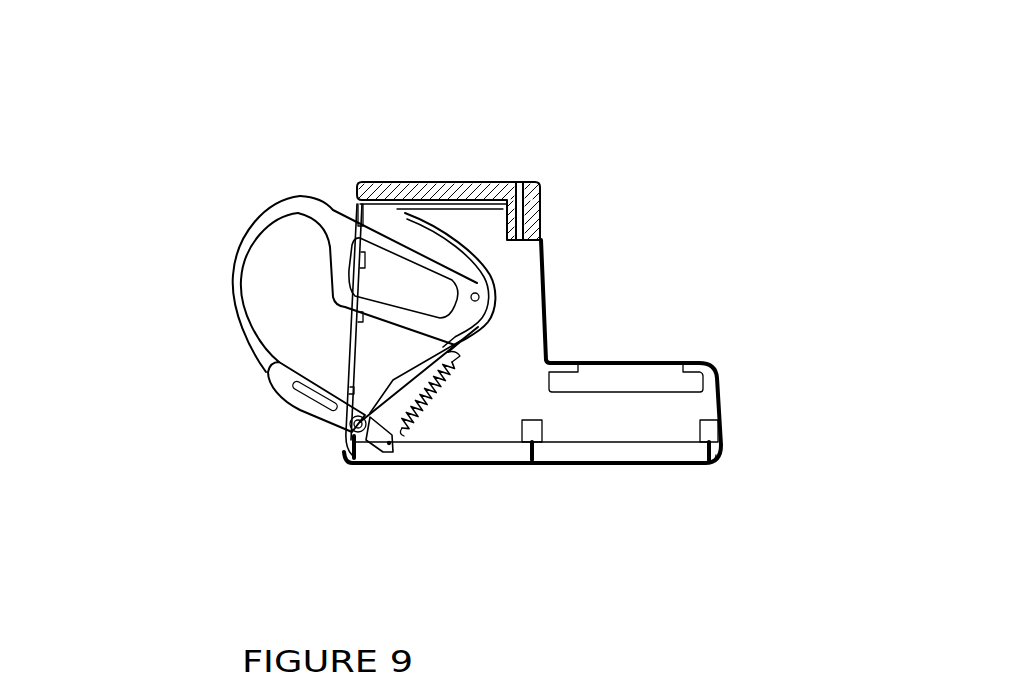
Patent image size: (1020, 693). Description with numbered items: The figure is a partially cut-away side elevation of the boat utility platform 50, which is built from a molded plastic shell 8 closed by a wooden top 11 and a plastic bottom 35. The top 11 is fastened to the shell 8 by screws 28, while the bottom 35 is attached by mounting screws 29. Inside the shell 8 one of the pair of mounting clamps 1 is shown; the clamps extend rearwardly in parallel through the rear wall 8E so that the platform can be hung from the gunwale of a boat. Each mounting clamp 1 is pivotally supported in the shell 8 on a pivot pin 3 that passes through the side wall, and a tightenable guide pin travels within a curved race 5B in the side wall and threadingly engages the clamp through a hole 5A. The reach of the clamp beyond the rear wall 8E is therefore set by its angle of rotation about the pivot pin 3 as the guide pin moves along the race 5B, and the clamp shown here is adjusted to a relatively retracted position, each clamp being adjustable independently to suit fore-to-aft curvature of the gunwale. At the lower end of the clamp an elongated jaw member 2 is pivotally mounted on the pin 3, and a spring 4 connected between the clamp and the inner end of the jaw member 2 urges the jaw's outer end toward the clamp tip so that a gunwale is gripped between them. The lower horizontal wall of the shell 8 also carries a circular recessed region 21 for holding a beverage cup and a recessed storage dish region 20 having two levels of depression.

The mounting clamp 1 is at (240, 253).
The jaw member 2 is at (323, 410).
The pivot pin 3 is at (358, 428).
The spring 4 is at (420, 415).
The hole 5A is at (480, 293).
The curved race 5B is at (424, 245).
The shell 8 is at (547, 323).
The rear wall 8E is at (340, 345).
The top 11 is at (385, 180).
The recessed storage dish region 20 is at (720, 390).
The circular recessed region 21 is at (603, 368).
The screw 28 is at (522, 185).
The mounting screw 29 is at (720, 463).
The bottom 35 is at (587, 463).
The utility platform 50 is at (412, 145).